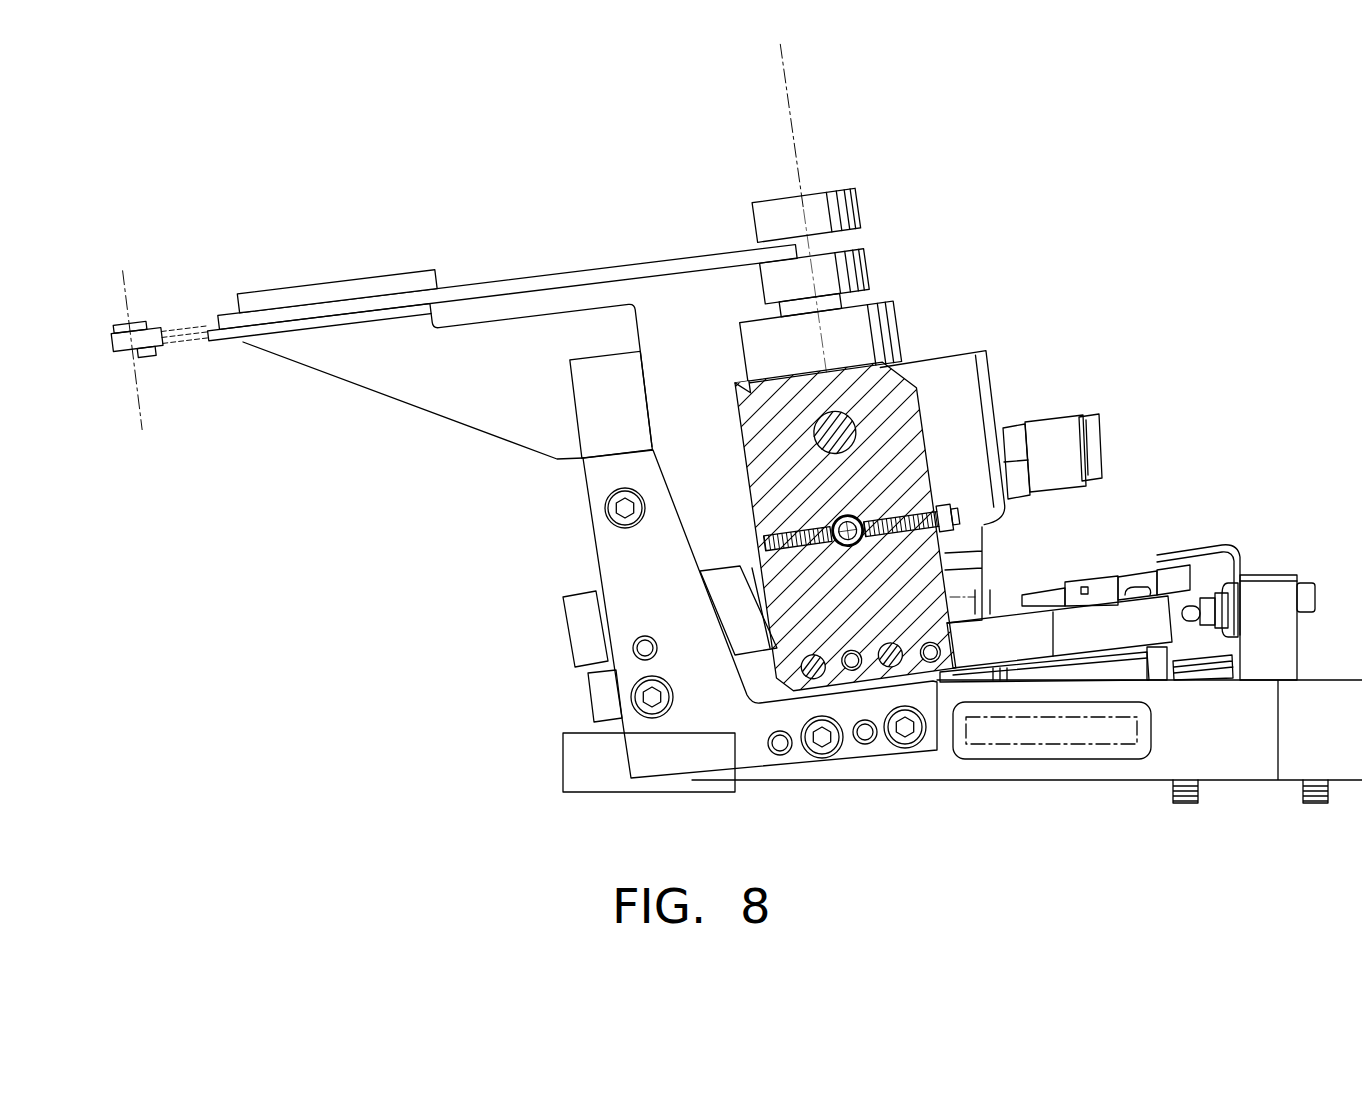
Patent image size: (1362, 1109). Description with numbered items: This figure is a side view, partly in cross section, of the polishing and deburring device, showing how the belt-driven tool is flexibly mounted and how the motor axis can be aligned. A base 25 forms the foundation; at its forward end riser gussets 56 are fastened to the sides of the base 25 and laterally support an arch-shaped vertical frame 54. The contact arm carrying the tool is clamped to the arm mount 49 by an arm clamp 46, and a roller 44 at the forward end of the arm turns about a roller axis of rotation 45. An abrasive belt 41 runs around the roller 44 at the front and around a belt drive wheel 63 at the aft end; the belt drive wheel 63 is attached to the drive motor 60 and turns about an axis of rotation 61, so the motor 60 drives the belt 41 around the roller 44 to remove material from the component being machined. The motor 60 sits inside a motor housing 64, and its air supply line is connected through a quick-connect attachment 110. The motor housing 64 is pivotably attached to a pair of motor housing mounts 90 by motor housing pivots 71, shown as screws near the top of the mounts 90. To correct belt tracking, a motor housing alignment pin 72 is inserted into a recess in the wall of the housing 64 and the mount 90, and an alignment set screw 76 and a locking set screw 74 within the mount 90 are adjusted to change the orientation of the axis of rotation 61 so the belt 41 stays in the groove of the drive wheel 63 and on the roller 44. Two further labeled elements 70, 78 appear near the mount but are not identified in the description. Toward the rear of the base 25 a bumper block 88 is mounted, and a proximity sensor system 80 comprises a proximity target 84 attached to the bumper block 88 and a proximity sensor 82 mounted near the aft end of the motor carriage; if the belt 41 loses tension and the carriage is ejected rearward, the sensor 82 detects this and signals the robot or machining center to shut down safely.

The base 25 is at (1232, 750).
The abrasive belt 41 is at (573, 271).
The roller 44 is at (140, 353).
The roller axis of rotation 45 is at (125, 282).
The arm clamp 46 is at (318, 286).
The arm mount 49 is at (450, 398).
The vertical frame 54 is at (598, 402).
The riser gussets 56 is at (612, 563).
The motor 60 is at (898, 320).
The axis of rotation 61 is at (793, 124).
The belt drive wheel 63 is at (862, 240).
The motor housing 64 is at (987, 373).
The holder assembly 70 is at (872, 556).
The pivot 71 is at (857, 430).
The motor housing alignment pin 72 is at (847, 518).
The locking set screw 74 is at (777, 538).
The alignment set screw 76 is at (903, 498).
The nut 78 is at (942, 500).
The proximity sensor system 80 is at (1196, 522).
The proximity sensor 82 is at (1093, 583).
The proximity target 84 is at (1237, 548).
The bumper block 88 is at (1282, 640).
The motor housing mounts 90 is at (768, 422).
The quick-connect attachment 110 is at (1057, 427).